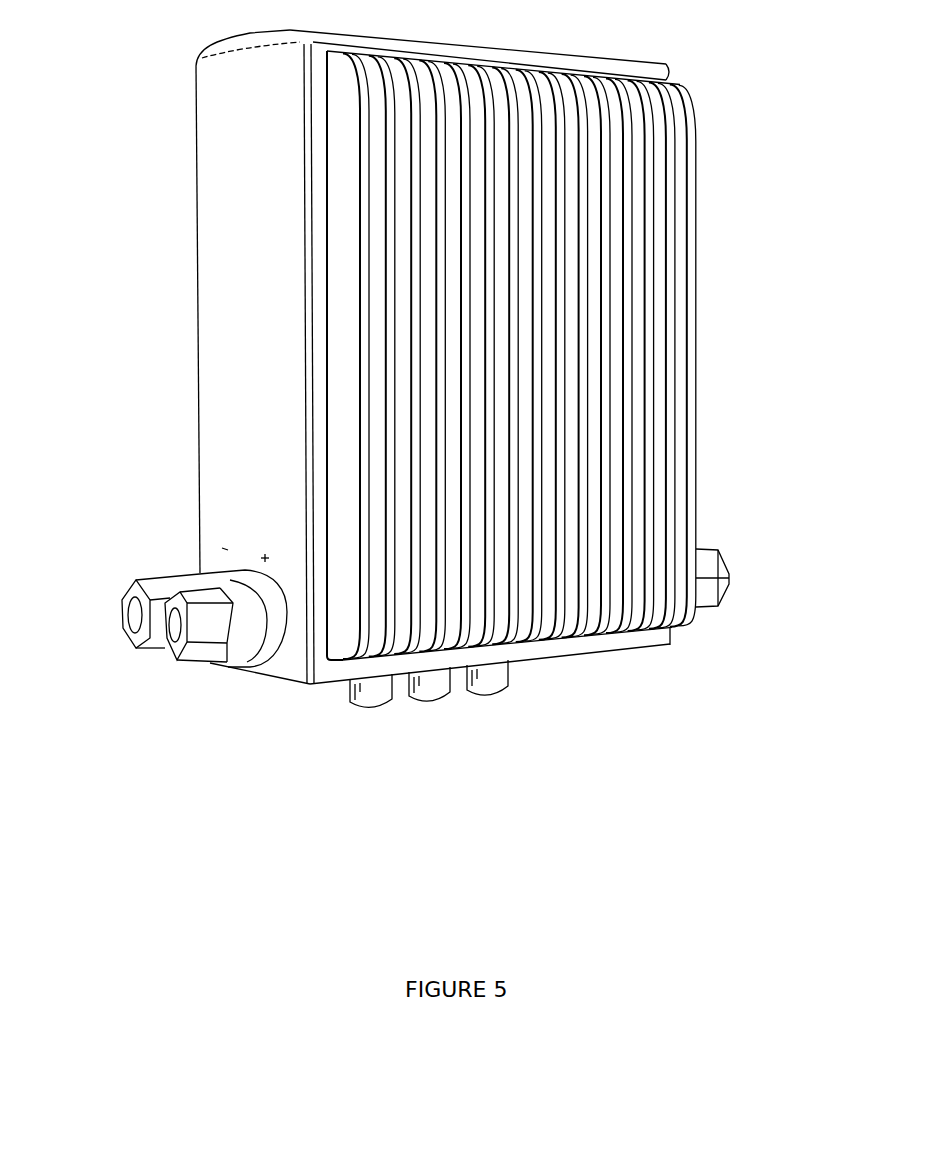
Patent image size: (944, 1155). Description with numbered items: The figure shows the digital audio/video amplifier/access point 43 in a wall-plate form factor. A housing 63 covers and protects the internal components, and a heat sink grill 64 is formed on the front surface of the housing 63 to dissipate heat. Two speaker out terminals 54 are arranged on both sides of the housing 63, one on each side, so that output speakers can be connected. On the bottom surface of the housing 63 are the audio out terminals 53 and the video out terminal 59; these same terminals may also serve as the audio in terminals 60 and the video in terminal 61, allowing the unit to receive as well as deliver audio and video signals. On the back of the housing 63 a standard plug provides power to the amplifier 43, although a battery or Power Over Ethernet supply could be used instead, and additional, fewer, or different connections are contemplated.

The audio/video amplifier/access point 43 is at (809, 346).
The housing 63 is at (487, 44).
The heat sink grill 64 is at (595, 235).
The speaker out terminals 54 is at (121, 638).
The audio out terminals 53 is at (375, 708).
The audio in terminals 60 is at (415, 702).
The video out terminal 59 is at (486, 698).
The video in terminal 61 is at (493, 710).